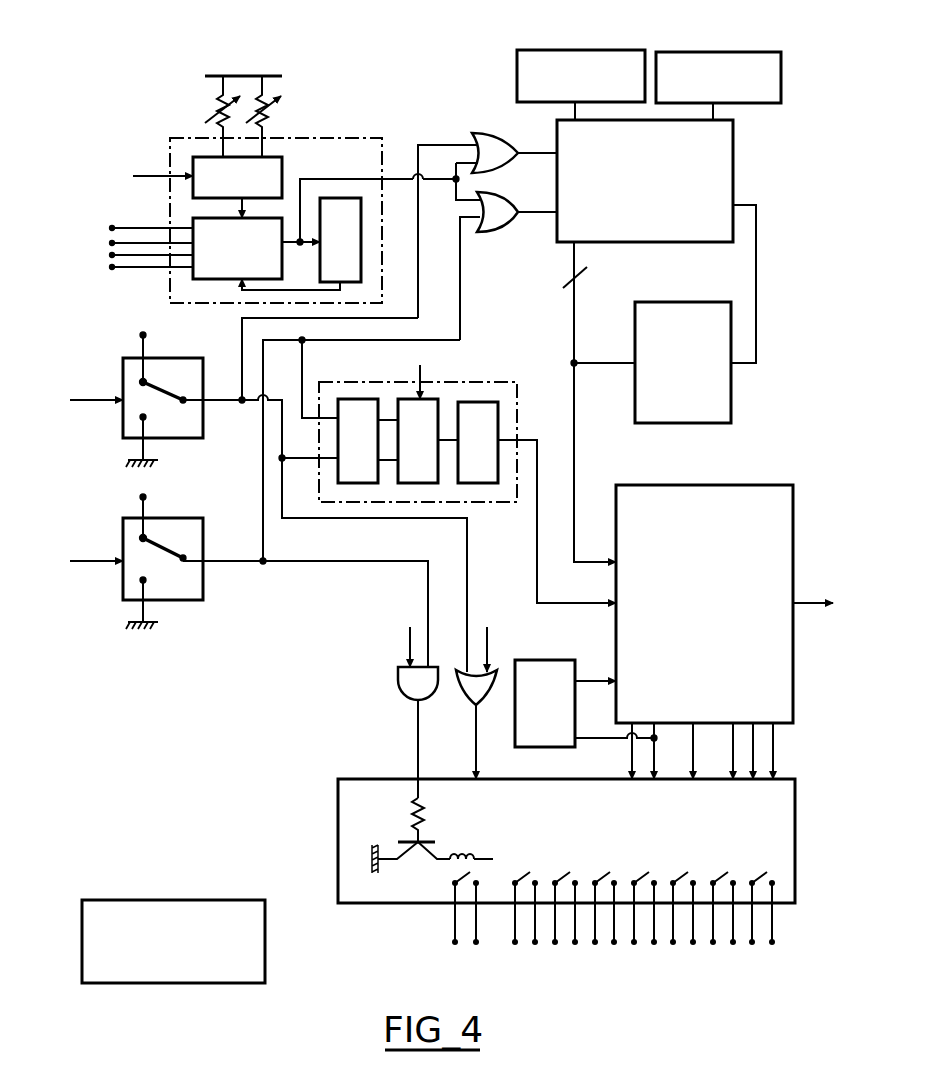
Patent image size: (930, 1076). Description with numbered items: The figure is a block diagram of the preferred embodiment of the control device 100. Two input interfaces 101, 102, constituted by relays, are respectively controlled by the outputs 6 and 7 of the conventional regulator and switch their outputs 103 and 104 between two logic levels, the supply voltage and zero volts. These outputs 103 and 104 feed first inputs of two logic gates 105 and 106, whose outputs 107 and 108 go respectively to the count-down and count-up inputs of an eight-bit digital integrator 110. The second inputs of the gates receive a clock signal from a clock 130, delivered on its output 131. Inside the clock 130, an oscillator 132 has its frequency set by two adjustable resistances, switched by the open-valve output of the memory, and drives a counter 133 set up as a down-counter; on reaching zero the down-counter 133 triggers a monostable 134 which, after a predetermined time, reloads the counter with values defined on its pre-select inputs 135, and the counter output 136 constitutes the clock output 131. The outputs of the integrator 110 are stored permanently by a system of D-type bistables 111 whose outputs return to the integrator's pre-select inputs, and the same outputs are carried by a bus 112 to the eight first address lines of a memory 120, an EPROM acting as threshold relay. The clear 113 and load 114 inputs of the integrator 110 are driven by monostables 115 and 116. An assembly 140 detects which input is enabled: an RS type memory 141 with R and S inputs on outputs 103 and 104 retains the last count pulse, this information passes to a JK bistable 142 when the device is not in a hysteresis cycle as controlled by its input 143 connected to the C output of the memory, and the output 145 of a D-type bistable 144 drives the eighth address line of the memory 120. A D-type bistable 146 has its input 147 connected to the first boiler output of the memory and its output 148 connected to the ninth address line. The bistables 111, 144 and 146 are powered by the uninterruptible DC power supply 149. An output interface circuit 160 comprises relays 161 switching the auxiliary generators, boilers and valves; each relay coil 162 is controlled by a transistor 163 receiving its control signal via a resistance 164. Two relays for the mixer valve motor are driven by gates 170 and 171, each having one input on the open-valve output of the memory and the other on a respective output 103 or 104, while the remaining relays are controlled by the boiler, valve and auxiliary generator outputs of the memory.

The control device 100 is at (228, 745).
The first input interface 101 is at (180, 358).
The second input interface 102 is at (183, 600).
The output of first input interface 103 is at (218, 399).
The output of second input interface 104 is at (222, 563).
The first logic gate 105 is at (484, 133).
The second logic gate 106 is at (487, 232).
The output of first logic gate 107 is at (525, 152).
The output of second logic gate 108 is at (530, 214).
The digital integrator 110 is at (734, 178).
The system of D-type bistables 111 is at (655, 423).
The bus 112 is at (574, 392).
The clear input 113 is at (578, 109).
The load input 114 is at (716, 110).
The clear monostable 115 is at (517, 56).
The load monostable 116 is at (781, 68).
The memory 120 is at (750, 485).
The clock 130 is at (345, 138).
The clock output 131 is at (418, 145).
The oscillator 132 is at (193, 160).
The down-counter 133 is at (193, 228).
The monostable 134 is at (361, 244).
The pre-select inputs 135 is at (107, 250).
The counter output 136 is at (290, 244).
The input detection assembly 140 is at (497, 382).
The RS type memory 141 is at (368, 399).
The JK bistable 142 is at (423, 483).
The JK bistable input 143 is at (422, 372).
The D-type bistable 144 is at (504, 413).
The output of D-type bistable 144 145 is at (537, 460).
The D-type bistable 146 is at (548, 660).
The input of D-type bistable 146 147 is at (600, 738).
The output of D-type bistable 146 148 is at (590, 681).
The uninterruptible DC power supply 149 is at (160, 983).
The output interface circuit 160 is at (338, 810).
The relays 161 is at (490, 851).
The relay coil 162 is at (464, 854).
The transistor 163 is at (412, 864).
The resistance 164 is at (412, 816).
The first gate 170 is at (398, 699).
The second gate 171 is at (466, 698).
The regulator output 6 is at (93, 398).
The regulator output 7 is at (93, 559).